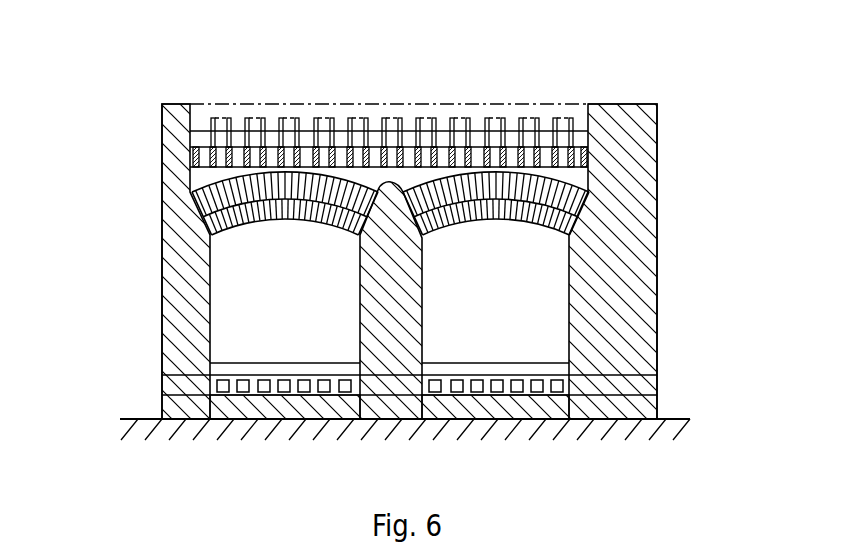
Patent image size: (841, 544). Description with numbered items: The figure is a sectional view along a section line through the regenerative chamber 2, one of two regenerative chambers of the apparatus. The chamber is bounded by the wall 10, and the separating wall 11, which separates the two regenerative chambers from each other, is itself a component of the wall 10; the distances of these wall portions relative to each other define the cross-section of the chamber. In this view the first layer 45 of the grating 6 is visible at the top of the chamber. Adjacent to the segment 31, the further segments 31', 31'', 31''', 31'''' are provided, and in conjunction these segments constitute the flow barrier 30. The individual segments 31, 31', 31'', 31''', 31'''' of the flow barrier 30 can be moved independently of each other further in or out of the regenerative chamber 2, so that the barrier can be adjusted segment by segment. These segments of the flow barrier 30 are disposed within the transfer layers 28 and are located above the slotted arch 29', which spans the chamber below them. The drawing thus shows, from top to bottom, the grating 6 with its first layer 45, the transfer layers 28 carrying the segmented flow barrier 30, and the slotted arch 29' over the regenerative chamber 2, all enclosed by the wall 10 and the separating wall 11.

The regenerative chamber 2 is at (648, 78).
The grating 6 is at (248, 118).
The wall 10 is at (162, 170).
The separating wall 11 is at (177, 253).
The transfer layers 28 is at (576, 140).
The slotted arch 29' is at (390, 218).
The flow barrier 30 is at (343, 118).
The segment 31 is at (397, 95).
The further segment 31' is at (379, 111).
The further segment 31'' is at (356, 106).
The further segment 31''' is at (422, 106).
The further segment 31'''' is at (444, 115).
The first layer 45 is at (213, 118).